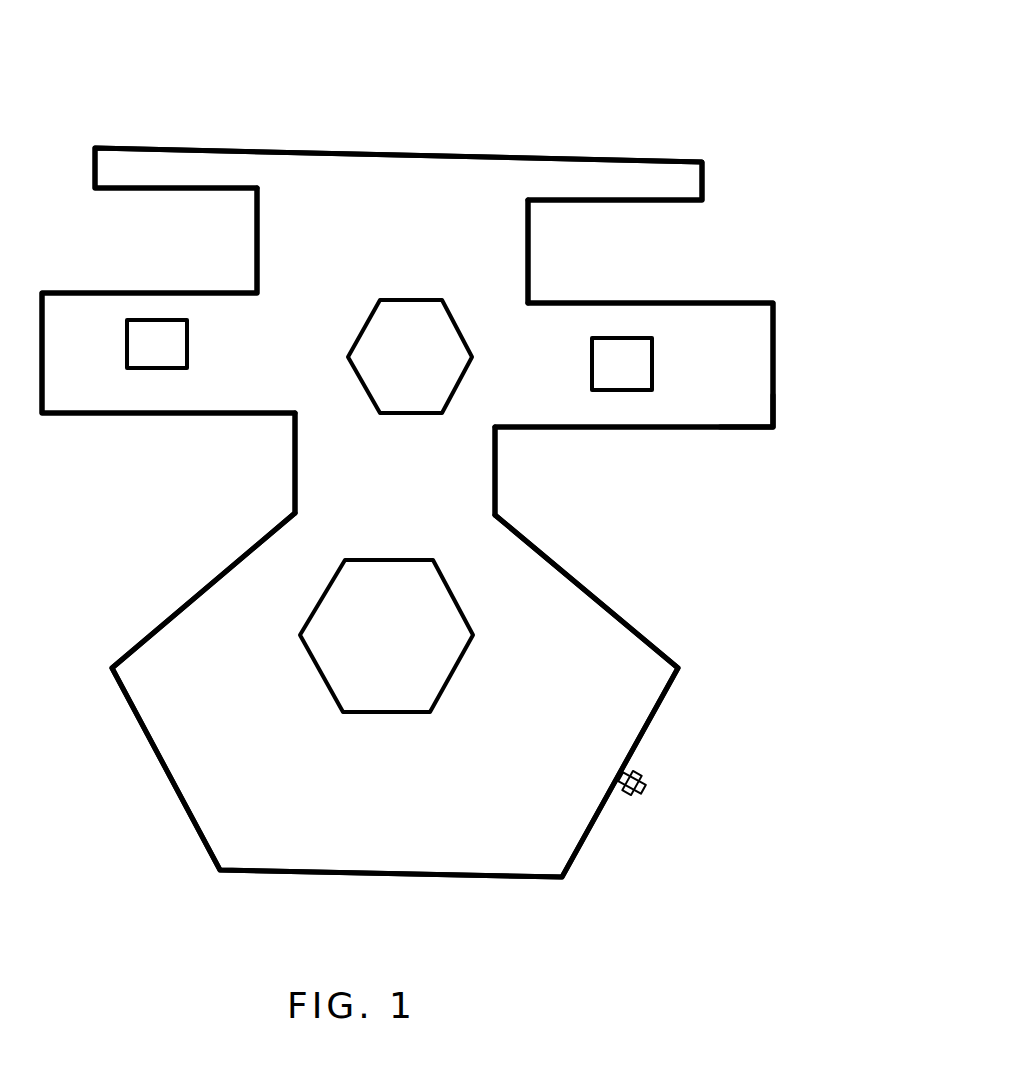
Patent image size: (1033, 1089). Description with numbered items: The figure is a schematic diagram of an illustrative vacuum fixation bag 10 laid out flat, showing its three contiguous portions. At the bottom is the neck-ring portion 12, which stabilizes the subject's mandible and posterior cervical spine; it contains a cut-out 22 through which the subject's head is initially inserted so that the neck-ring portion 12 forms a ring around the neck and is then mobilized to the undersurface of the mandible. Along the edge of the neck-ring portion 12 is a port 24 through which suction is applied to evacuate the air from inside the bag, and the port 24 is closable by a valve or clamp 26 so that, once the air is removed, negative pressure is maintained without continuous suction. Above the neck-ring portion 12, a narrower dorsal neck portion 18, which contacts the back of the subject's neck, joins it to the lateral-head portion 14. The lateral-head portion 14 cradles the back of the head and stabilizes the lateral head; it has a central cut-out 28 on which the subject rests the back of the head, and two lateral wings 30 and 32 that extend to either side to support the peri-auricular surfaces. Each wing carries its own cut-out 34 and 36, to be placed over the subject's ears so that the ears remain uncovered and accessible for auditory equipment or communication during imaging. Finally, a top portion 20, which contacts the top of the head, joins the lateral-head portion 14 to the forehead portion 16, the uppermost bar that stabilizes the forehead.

The vacuum fixation bag 10 is at (418, 77).
The neck-ring portion 12 is at (578, 627).
The lateral-head portion 14 is at (725, 322).
The forehead portion 16 is at (572, 173).
The dorsal neck portion 18 is at (467, 487).
The top portion 20 is at (512, 252).
The cut-out 22 is at (402, 652).
The port 24 is at (647, 783).
The valve or clamp 26 is at (637, 770).
The central cut-out 28 is at (428, 380).
The lateral wing 30 is at (757, 412).
The lateral wing 32 is at (60, 398).
The cut-out 34 is at (640, 380).
The cut-out 36 is at (175, 361).